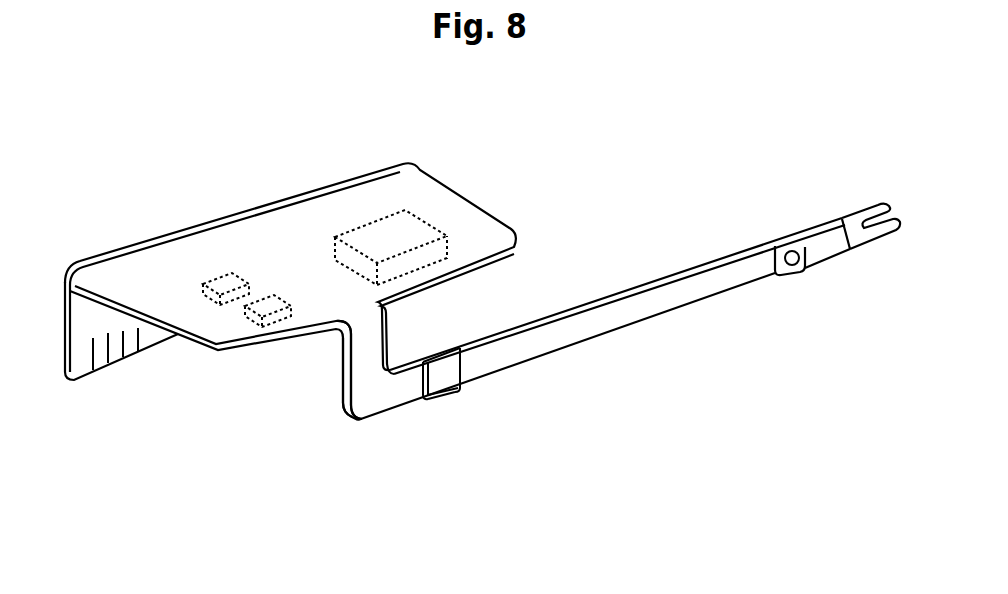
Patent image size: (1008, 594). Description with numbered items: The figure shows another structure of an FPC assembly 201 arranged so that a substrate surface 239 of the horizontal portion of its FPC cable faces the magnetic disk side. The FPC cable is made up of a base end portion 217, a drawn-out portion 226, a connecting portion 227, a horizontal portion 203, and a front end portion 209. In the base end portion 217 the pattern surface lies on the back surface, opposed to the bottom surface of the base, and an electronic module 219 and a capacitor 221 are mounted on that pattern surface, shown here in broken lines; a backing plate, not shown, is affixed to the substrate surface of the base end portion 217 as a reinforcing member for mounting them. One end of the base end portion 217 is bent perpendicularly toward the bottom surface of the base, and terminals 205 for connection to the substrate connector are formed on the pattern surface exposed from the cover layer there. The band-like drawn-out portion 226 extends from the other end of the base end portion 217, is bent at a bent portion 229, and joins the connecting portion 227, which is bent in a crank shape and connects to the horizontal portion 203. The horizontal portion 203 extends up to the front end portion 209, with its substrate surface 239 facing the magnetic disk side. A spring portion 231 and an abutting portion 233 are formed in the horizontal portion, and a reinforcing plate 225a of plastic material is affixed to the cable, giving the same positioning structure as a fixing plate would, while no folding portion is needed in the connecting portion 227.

The FPC assembly 201 is at (614, 170).
The horizontal portion 203 is at (668, 333).
The terminals 205 is at (116, 367).
The front end portion 209 is at (830, 206).
The base end portion 217 is at (208, 243).
The electronic module 219 is at (420, 220).
The capacitor 221 is at (231, 327).
The reinforcing plate 225a is at (462, 362).
The drawn-out portion 226 is at (353, 318).
The connecting portion 227 is at (355, 417).
The bent portion 229 is at (334, 333).
The spring portion 231 is at (437, 399).
The abutting portion 233 is at (453, 343).
The substrate surface 239 is at (723, 293).